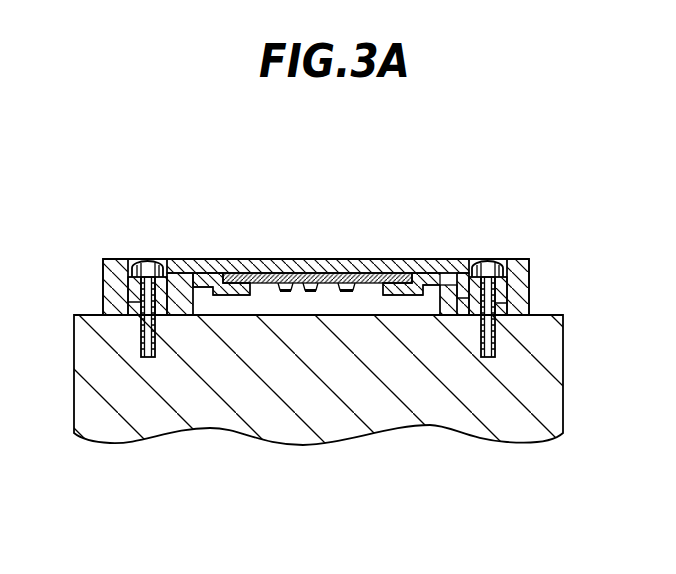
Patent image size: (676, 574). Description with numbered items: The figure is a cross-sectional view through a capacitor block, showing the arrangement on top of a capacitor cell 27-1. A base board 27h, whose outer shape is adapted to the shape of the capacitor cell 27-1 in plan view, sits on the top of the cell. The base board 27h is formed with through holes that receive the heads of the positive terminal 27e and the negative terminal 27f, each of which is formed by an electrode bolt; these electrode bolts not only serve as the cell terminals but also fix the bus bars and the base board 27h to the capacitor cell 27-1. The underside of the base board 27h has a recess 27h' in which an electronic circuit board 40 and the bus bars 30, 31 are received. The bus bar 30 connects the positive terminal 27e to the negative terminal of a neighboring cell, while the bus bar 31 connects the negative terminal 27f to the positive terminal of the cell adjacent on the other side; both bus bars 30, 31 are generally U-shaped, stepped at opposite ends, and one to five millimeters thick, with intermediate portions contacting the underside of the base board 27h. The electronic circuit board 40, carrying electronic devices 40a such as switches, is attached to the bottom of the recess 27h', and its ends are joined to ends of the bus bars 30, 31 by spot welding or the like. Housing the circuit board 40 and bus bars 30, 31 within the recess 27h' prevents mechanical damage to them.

The capacitor cell 27-1 is at (582, 407).
The bus bar 31 is at (433, 265).
The bus bar 30 is at (198, 277).
The base board 27h is at (318, 235).
The recess 27h' is at (408, 225).
The electronic circuit board 40 is at (283, 280).
The electronic devices 40a is at (316, 283).
The positive terminal 27e is at (147, 262).
The negative terminal 27f is at (488, 262).